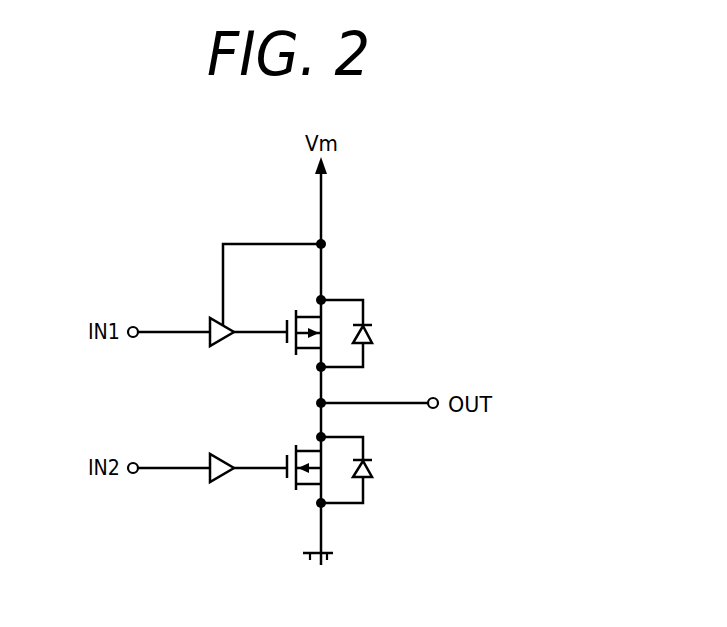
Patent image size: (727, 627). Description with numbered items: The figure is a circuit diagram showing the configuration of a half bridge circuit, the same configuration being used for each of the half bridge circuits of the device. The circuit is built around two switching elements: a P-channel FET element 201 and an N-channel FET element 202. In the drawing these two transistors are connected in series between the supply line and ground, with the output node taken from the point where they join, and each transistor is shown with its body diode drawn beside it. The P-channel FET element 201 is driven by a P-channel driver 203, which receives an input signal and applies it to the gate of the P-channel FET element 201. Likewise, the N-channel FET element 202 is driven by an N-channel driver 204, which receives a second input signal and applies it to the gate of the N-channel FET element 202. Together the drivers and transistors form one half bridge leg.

The P-channel FET element 201 is at (374, 328).
The N-channel FET element 202 is at (374, 464).
The P-channel driver 203 is at (208, 319).
The N-channel driver 204 is at (208, 455).